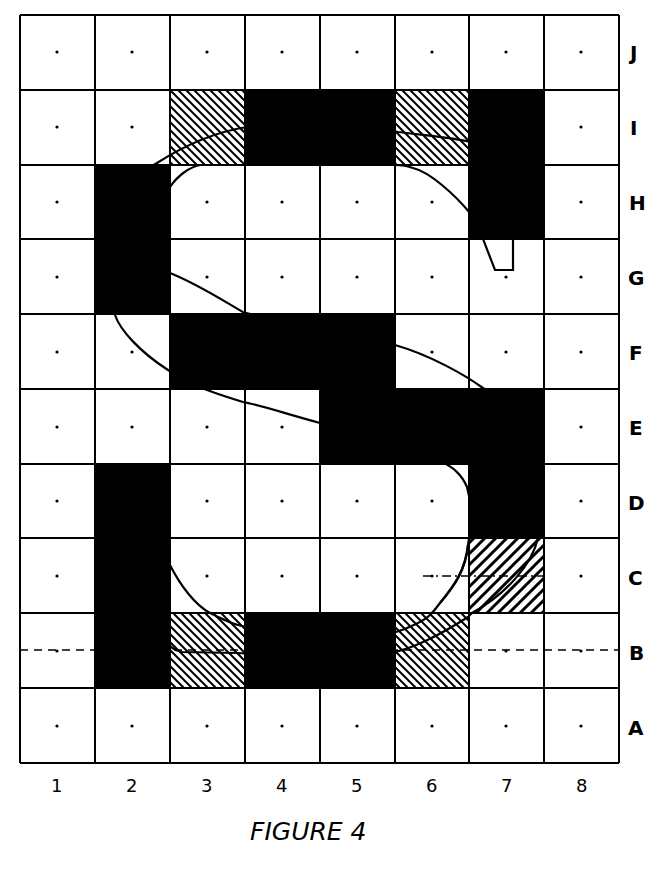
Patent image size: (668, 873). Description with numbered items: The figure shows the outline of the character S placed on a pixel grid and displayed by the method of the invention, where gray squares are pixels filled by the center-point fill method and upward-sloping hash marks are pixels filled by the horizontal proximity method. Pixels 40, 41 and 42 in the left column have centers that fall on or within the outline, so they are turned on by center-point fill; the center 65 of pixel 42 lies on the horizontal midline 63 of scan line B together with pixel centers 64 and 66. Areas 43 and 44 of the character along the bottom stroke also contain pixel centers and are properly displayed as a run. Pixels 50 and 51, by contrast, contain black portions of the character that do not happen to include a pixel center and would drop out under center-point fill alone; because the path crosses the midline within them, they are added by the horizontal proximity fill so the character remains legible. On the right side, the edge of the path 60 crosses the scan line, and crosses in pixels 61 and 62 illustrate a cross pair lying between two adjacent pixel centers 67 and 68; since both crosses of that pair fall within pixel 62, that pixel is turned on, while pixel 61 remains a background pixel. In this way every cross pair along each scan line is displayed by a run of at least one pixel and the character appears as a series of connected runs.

The pixel 40 is at (93, 513).
The pixel 41 is at (93, 586).
The pixel 42 is at (93, 659).
The area of character 43 is at (277, 688).
The area of character 44 is at (350, 688).
The pixel 50 is at (238, 658).
The pixel 51 is at (432, 688).
The outline segment crossing pixel 60 is at (457, 577).
The pixel 61 is at (400, 600).
The pixel 62 is at (535, 600).
The horizontal midline 63 is at (562, 650).
The pixel center 64 is at (52, 650).
The pixel center 65 is at (128, 688).
The pixel center 66 is at (200, 660).
The pixel center 67 is at (423, 576).
The pixel center 68 is at (512, 564).